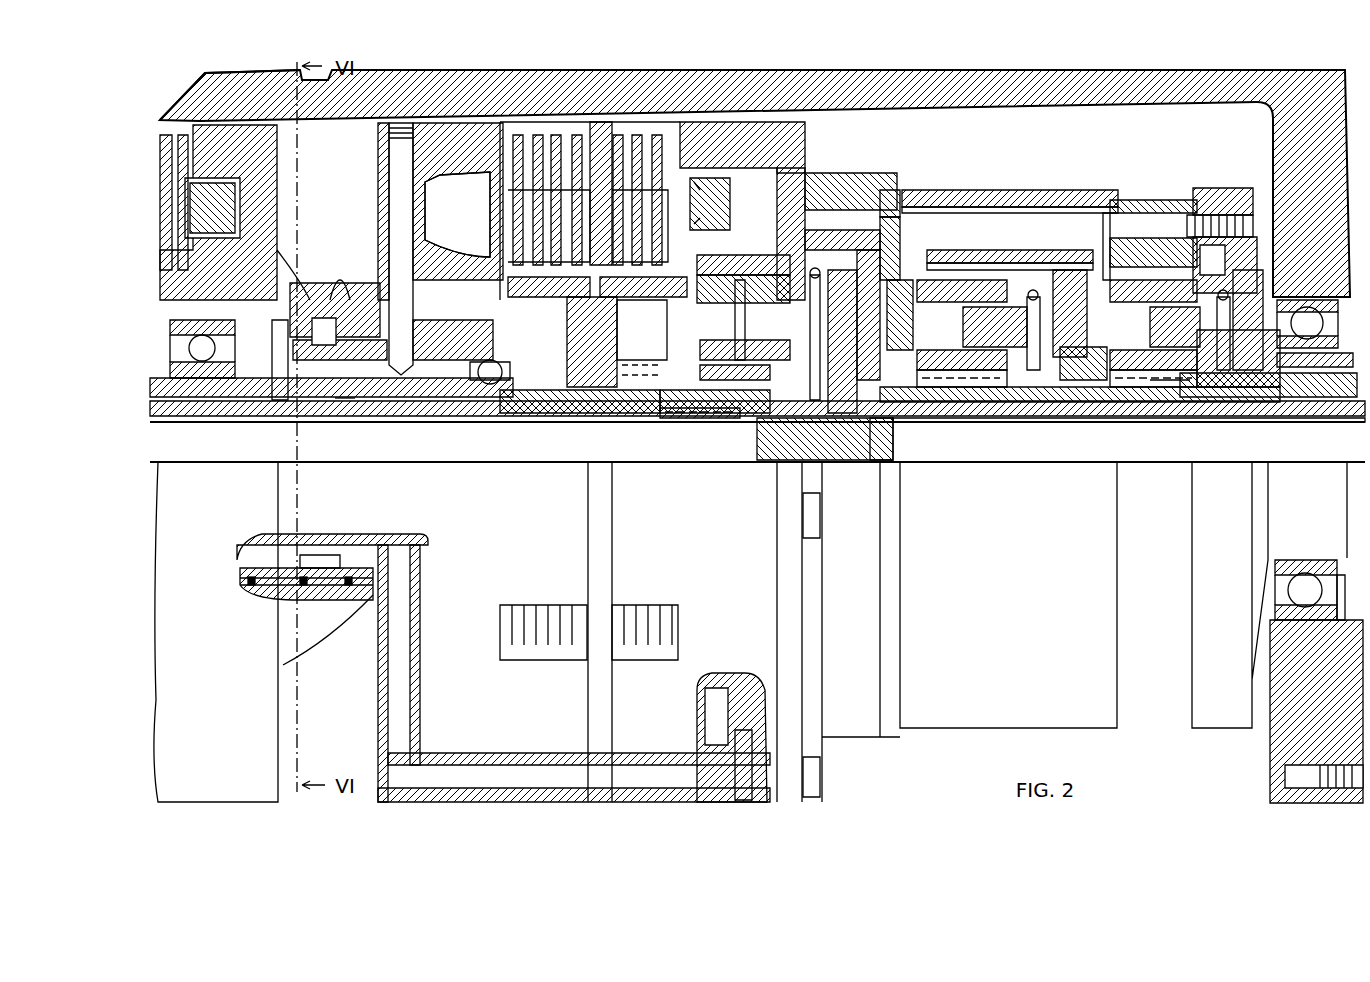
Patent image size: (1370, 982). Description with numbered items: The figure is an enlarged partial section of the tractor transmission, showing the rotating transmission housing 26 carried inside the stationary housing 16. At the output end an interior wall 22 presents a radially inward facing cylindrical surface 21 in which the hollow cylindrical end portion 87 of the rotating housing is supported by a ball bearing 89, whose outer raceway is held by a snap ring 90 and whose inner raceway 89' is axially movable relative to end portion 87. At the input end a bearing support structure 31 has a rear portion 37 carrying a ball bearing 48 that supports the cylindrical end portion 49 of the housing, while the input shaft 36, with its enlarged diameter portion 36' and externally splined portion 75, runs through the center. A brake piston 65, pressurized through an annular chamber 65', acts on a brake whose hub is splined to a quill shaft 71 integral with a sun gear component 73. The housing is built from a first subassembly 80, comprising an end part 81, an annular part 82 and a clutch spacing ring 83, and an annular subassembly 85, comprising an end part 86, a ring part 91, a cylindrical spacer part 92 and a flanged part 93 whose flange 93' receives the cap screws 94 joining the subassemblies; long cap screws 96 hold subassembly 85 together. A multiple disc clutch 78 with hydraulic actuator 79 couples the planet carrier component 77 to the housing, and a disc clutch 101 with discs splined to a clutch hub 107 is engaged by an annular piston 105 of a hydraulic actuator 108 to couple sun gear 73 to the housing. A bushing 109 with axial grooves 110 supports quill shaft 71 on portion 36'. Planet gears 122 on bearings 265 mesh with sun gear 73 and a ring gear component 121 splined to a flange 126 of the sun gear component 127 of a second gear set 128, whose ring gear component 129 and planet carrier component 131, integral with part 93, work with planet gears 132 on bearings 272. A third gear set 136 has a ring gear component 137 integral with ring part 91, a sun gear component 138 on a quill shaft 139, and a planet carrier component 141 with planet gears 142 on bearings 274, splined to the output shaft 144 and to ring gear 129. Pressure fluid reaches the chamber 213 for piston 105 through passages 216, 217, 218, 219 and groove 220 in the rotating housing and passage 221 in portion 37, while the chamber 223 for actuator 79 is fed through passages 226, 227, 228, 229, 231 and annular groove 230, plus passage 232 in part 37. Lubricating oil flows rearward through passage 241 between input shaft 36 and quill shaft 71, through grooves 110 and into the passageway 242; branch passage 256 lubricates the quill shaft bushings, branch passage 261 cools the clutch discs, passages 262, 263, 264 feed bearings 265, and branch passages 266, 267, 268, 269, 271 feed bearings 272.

The stationary transmission housing 16 is at (205, 80).
The radially inward facing cylindrical surface 21 is at (1328, 298).
The interior wall 22 is at (1270, 752).
The rotating transmission housing 26 is at (957, 729).
The bearing support structure 31 is at (333, 640).
The input shaft 36 is at (757, 461).
The enlarged diameter portion of input shaft 36' is at (654, 632).
The rear portion of bearing support structure 37 is at (277, 155).
The ball bearing 48 is at (170, 340).
The cylindrical end portion 49 is at (352, 300).
The brake piston 65 is at (196, 202).
The annular chamber 65' is at (262, 208).
The quill shaft 71 is at (465, 412).
The sun gear component 73 is at (618, 408).
The externally splined portion 75 is at (868, 418).
The planet carrier component 77 is at (825, 360).
The multiple disc clutch 78 is at (645, 135).
The hydraulic actuator 79 is at (705, 180).
The first subassembly 80 is at (438, 118).
The end part 81 is at (378, 178).
The annular part 82 is at (745, 125).
The clutch spacing ring 83 is at (600, 125).
The annular subassembly 85 is at (990, 190).
The end part 86 is at (1215, 188).
The hollow cylindrical end portion 87 is at (1343, 352).
The ball bearing 89 is at (1306, 623).
The inner raceway 89' is at (1306, 550).
The snap ring 90 is at (1340, 622).
The ring part 91 is at (1148, 200).
The cylindrical spacer part 92 is at (1045, 190).
The flanged part 93 is at (851, 179).
The flange 93' is at (815, 208).
The cap screws 94 is at (820, 518).
The long cap screws 96 is at (888, 190).
The disc clutch 101 is at (530, 135).
The annular piston 105 is at (490, 221).
The clutch hub 107 is at (567, 347).
The hydraulic actuator 108 is at (485, 205).
The bushing 109 is at (672, 418).
The axial grooves 110 is at (700, 417).
The ring gear component 121 is at (815, 248).
The planet gears 122 is at (690, 380).
The radially outward extending flange 126 is at (845, 325).
The sun gear component 127 is at (980, 402).
The second gear set 128 is at (1035, 263).
The ring gear component 129 is at (990, 263).
The planet carrier component 131 is at (900, 250).
The planet gears 132 is at (990, 380).
The third gear set 136 is at (1230, 260).
The ring gear component 137 is at (1187, 240).
The sun gear component 138 is at (1175, 402).
The quill shaft 139 is at (1320, 398).
The planet carrier component 141 is at (1103, 260).
The planet gears 142 is at (1125, 380).
The output shaft 144 is at (1158, 405).
The chamber 213 is at (500, 310).
The passage 216 is at (430, 310).
The passage 217 is at (392, 233).
The passage 218 is at (430, 395).
The passage 219 is at (280, 380).
The groove 220 is at (275, 335).
The passage 221 is at (318, 325).
The chamber 223 is at (752, 675).
The passage 226 is at (745, 740).
The passage 227 is at (530, 770).
The passage 228 is at (378, 715).
The passage 229 is at (390, 545).
The annular groove 230 is at (325, 585).
The passage 231 is at (300, 568).
The passage 232 is at (326, 300).
The passage 241 is at (225, 420).
The passageway 242 is at (925, 420).
The branch passage 256 is at (355, 412).
The branch passage 261 is at (555, 412).
The passage 262 is at (795, 418).
The passage 263 is at (745, 325).
The passage 264 is at (730, 340).
The bearings 265 is at (775, 275).
The branch passage 266 is at (1030, 400).
The branch passage 267 is at (1040, 370).
The branch passage 268 is at (1045, 318).
The branch passage 269 is at (963, 320).
The branch passage 271 is at (963, 340).
The bearings 272 is at (980, 300).
The bearings 274 is at (1140, 275).